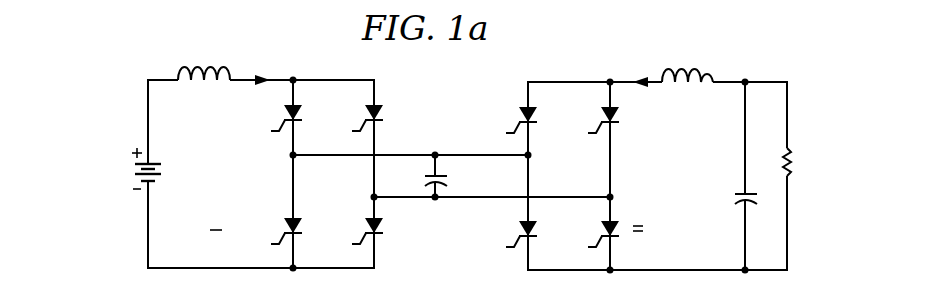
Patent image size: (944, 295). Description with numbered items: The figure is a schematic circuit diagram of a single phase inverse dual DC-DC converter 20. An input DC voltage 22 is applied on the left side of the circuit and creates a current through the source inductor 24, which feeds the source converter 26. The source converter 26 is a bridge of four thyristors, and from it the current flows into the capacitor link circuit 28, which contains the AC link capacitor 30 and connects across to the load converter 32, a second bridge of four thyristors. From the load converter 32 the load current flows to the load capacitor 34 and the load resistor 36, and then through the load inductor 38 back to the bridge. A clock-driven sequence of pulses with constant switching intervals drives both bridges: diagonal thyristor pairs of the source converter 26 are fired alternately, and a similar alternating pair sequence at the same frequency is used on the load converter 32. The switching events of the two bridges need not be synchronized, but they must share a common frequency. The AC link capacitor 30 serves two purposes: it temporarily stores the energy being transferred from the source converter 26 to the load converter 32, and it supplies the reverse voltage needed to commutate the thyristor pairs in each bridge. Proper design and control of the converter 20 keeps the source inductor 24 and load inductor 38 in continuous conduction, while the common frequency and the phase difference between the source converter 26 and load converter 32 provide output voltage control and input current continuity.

The DC-DC converter 20 is at (84, 69).
The input DC voltage 22 is at (119, 187).
The source inductor 24 is at (172, 52).
The source converter 26 is at (395, 93).
The capacitor link circuit 28 is at (435, 210).
The AC link capacitor 30 is at (450, 182).
The load converter 32 is at (506, 93).
The load capacitor 34 is at (737, 199).
The load resistor 36 is at (793, 165).
The load inductor 38 is at (721, 50).